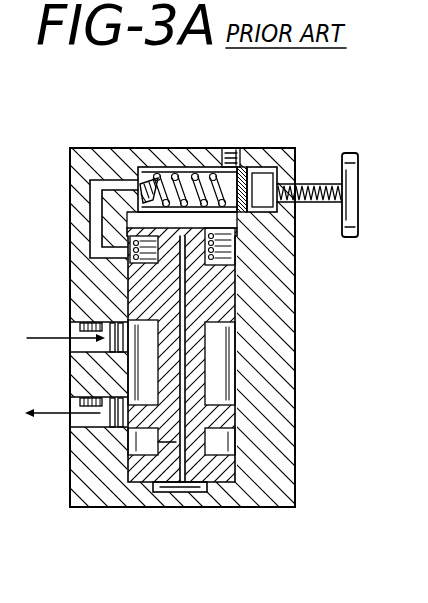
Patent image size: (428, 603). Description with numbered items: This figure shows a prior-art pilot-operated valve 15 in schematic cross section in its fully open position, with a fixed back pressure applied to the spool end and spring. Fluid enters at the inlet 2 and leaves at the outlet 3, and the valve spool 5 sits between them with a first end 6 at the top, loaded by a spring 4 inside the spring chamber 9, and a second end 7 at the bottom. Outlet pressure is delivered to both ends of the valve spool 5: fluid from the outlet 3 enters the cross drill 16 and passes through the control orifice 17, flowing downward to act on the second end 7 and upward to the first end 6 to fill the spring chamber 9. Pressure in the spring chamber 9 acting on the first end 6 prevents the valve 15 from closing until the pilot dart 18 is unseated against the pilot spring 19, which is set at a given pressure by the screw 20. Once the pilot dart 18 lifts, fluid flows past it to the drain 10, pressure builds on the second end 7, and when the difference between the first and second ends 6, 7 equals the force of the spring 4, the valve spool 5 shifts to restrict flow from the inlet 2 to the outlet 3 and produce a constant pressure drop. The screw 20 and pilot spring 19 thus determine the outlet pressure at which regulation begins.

The inlet 2 is at (77, 328).
The outlet 3 is at (75, 405).
The spring 4 is at (235, 226).
The valve spool 5 is at (198, 348).
The first end 6 is at (243, 218).
The second end 7 is at (200, 491).
The spring chamber 9 is at (120, 255).
The drain 10 is at (233, 148).
The pilot-operated valve 15 is at (300, 127).
The cross drill 16 is at (172, 446).
The control orifice 17 is at (182, 393).
The pilot dart 18 is at (118, 148).
The pilot spring 19 is at (170, 148).
The screw 20 is at (321, 183).